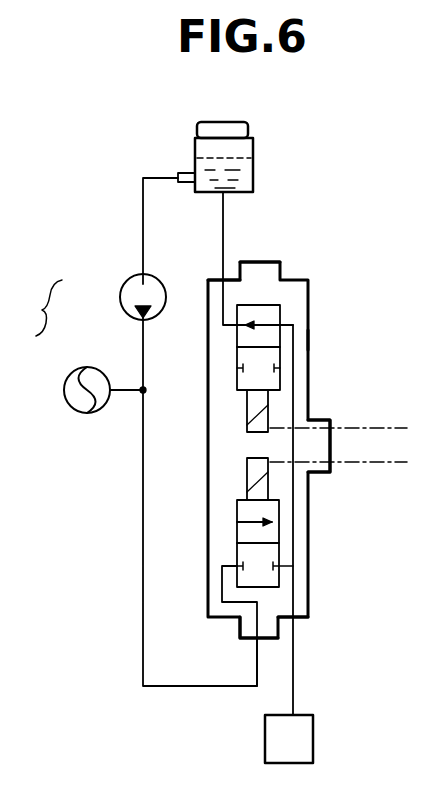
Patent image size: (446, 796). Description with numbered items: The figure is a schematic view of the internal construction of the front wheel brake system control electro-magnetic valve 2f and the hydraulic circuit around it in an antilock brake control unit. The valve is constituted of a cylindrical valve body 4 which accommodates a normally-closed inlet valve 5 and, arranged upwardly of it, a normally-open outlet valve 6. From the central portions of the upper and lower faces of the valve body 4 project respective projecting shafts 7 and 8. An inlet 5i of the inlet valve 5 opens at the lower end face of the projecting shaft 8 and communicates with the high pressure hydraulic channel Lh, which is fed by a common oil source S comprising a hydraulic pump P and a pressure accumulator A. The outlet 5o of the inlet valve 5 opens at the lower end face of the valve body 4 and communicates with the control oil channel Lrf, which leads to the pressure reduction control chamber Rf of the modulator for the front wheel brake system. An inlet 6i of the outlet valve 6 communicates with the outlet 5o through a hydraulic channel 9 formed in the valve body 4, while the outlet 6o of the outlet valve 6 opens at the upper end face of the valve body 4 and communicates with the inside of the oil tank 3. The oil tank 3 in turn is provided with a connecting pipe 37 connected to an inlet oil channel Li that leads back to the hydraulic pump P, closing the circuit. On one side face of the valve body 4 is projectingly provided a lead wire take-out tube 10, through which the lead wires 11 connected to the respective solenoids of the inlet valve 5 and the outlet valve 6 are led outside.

The oil tank 3 is at (253, 160).
The connecting pipe 37 is at (190, 173).
The inlet oil channel Li is at (143, 213).
The hydraulic pump P is at (120, 297).
The common oil source S is at (44, 308).
The pressure accumulator A is at (76, 371).
The high pressure hydraulic channel Lh is at (143, 517).
The valve body 4 is at (308, 357).
The projecting shaft 7 is at (258, 260).
The outlet of outlet valve 6o is at (220, 280).
The outlet valve 6 is at (276, 305).
The inlet of outlet valve 6i is at (292, 325).
The front wheel brake system control electro-magnetic valve 2f is at (310, 340).
The hydraulic channel 9 is at (293, 397).
The lead wire take-out tube 10 is at (318, 473).
The lead wires 11 is at (383, 460).
The inlet valve 5 is at (280, 541).
The outlet of inlet valve 5o is at (296, 617).
The inlet of inlet valve 5i is at (255, 638).
The projecting shaft 8 is at (262, 639).
The control oil channel Lrf is at (293, 686).
The pressure reduction control chamber Rf is at (313, 740).